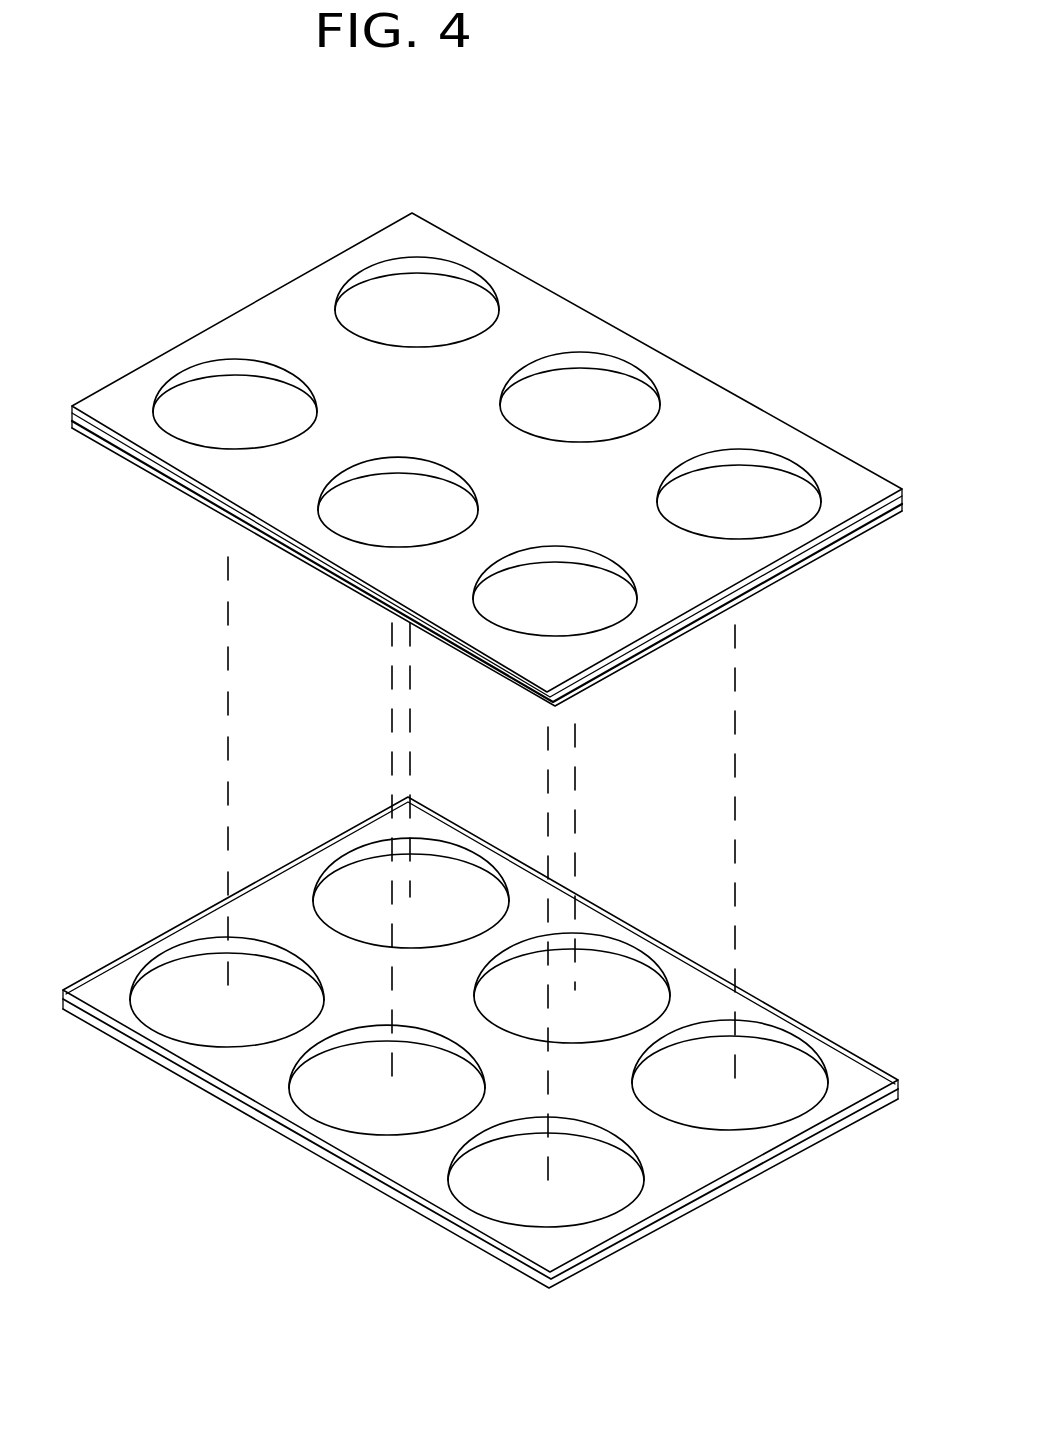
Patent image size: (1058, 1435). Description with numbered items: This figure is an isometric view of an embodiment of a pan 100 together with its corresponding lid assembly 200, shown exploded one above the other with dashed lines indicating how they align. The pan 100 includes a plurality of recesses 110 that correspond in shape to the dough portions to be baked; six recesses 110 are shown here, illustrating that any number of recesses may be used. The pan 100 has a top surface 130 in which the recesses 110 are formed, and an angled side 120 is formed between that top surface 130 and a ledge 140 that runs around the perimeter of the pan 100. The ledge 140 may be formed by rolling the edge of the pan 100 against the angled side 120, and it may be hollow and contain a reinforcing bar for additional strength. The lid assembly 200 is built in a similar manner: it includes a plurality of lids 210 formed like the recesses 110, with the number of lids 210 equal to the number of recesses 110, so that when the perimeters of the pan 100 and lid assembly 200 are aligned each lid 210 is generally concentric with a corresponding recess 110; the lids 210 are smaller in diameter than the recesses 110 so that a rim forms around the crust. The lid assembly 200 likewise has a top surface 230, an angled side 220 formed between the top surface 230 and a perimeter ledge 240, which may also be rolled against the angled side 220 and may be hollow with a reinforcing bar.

The pan 100 is at (296, 1254).
The recesses 110 is at (460, 916).
The angled side 120 is at (220, 1083).
The top surface 130 is at (452, 994).
The ledge 140 is at (255, 1120).
The lid assembly 200 is at (745, 306).
The lids 210 is at (430, 316).
The angled side 220 is at (152, 476).
The top surface 230 is at (433, 404).
The ledge 240 is at (187, 493).